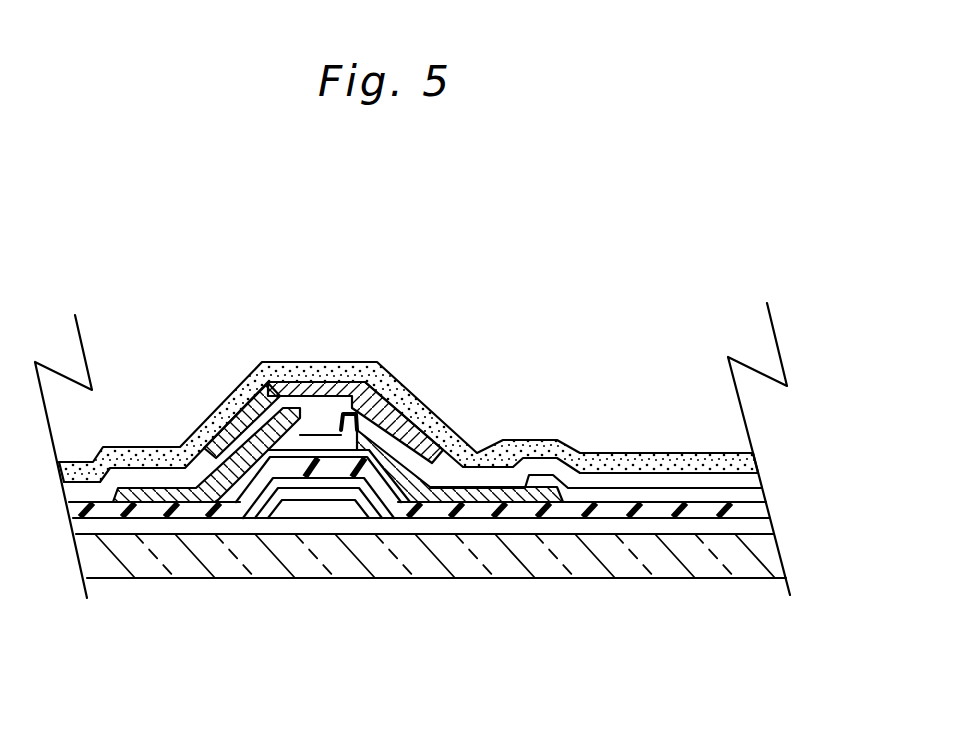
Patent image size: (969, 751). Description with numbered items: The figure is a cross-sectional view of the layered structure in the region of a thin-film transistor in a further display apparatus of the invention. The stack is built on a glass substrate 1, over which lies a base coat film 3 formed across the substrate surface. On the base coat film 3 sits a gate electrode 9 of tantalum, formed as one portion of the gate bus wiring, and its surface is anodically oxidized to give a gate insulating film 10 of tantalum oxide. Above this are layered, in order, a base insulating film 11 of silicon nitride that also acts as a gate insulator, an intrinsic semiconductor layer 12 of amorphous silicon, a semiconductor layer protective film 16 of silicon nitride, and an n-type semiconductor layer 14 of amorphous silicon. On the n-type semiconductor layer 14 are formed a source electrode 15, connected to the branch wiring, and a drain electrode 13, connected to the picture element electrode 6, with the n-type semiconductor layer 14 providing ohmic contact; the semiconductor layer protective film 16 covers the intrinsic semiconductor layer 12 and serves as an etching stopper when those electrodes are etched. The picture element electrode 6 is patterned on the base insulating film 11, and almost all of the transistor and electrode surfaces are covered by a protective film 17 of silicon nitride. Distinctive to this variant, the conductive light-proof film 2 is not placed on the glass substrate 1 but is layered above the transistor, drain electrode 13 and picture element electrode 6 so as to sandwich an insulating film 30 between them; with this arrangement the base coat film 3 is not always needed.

The glass substrate 1 is at (770, 560).
The conductive light-proof film 2 is at (387, 400).
The base coat film 3 is at (767, 523).
The picture element electrode 6 is at (623, 493).
The gate electrode 9 is at (330, 510).
The gate insulating film 10 is at (260, 503).
The base insulating film 11 is at (760, 508).
The intrinsic semiconductor layer 12 is at (460, 485).
The drain electrode 13 is at (347, 417).
The n-type semiconductor layer 14 is at (212, 490).
The source electrode 15 is at (247, 447).
The semiconductor layer protective film 16 is at (320, 445).
The protective film 17 is at (752, 461).
The insulating film 30 is at (752, 482).